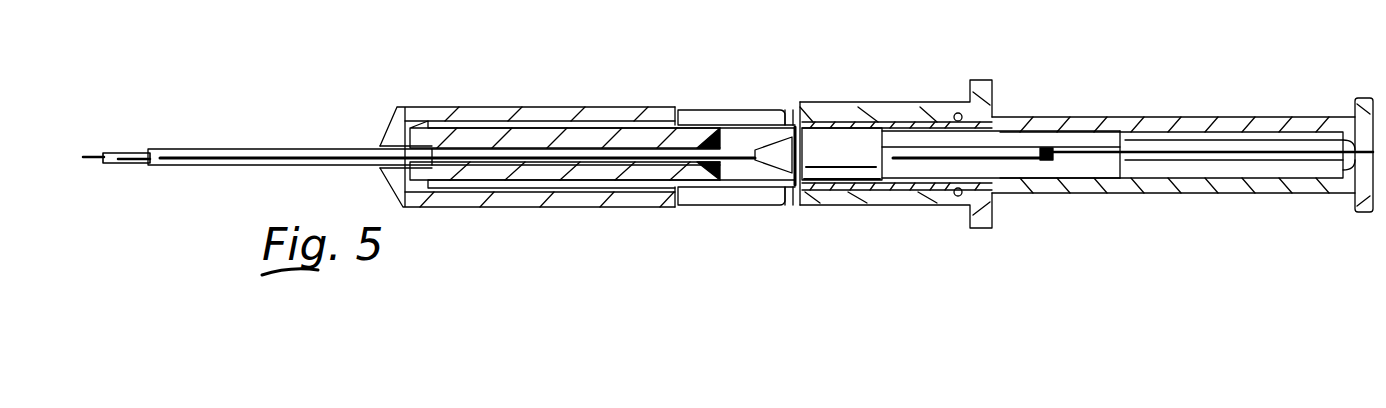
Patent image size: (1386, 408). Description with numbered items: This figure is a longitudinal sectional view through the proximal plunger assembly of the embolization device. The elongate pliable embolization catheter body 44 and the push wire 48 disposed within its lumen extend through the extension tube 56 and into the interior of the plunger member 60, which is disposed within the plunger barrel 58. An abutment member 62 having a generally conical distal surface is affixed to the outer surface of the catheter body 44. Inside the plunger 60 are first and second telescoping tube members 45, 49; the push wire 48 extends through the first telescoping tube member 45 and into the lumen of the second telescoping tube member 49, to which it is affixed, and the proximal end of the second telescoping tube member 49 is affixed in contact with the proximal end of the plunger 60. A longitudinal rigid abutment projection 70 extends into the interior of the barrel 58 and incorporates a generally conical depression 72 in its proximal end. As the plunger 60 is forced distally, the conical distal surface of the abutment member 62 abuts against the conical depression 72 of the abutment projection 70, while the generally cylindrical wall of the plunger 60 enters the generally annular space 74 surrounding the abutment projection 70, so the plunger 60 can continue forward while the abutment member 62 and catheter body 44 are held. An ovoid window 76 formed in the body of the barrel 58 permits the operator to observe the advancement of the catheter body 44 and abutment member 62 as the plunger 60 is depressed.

The embolization catheter body 44 is at (135, 153).
The push wire 48 is at (97, 160).
The extension tube 56 is at (268, 148).
The annular space 74 is at (497, 123).
The abutment projection 70 is at (580, 142).
The conical depression 72 is at (728, 160).
The ovoid window 76 is at (763, 193).
The abutment member 62 is at (847, 150).
The plunger barrel 58 is at (925, 103).
The plunger member 60 is at (1247, 127).
The first telescoping tube member 45 is at (940, 165).
The second telescoping tube member 49 is at (1083, 147).